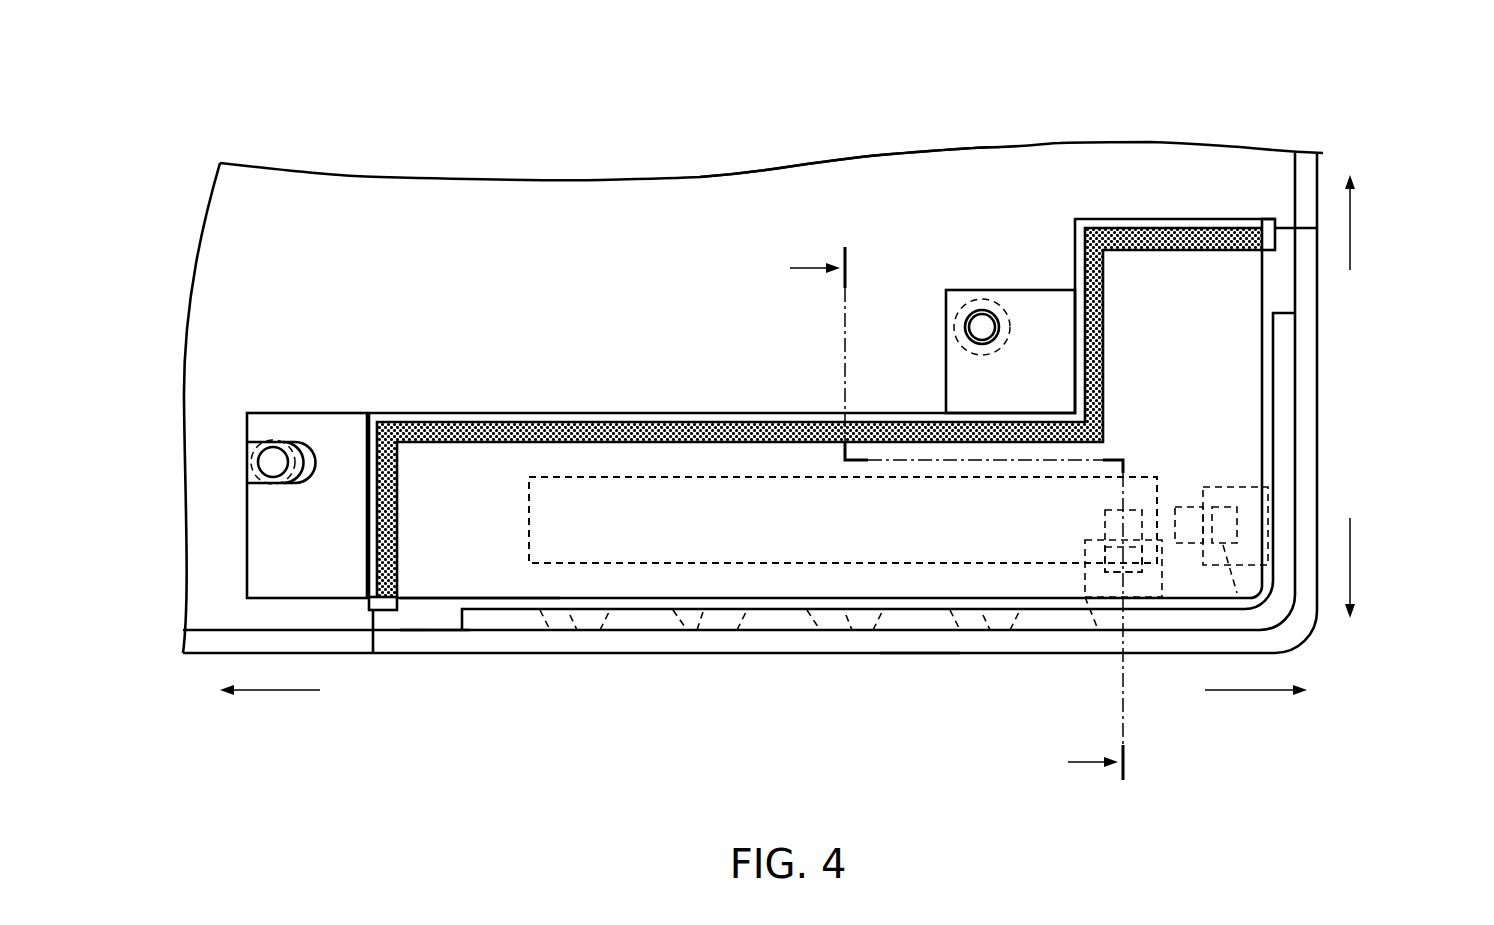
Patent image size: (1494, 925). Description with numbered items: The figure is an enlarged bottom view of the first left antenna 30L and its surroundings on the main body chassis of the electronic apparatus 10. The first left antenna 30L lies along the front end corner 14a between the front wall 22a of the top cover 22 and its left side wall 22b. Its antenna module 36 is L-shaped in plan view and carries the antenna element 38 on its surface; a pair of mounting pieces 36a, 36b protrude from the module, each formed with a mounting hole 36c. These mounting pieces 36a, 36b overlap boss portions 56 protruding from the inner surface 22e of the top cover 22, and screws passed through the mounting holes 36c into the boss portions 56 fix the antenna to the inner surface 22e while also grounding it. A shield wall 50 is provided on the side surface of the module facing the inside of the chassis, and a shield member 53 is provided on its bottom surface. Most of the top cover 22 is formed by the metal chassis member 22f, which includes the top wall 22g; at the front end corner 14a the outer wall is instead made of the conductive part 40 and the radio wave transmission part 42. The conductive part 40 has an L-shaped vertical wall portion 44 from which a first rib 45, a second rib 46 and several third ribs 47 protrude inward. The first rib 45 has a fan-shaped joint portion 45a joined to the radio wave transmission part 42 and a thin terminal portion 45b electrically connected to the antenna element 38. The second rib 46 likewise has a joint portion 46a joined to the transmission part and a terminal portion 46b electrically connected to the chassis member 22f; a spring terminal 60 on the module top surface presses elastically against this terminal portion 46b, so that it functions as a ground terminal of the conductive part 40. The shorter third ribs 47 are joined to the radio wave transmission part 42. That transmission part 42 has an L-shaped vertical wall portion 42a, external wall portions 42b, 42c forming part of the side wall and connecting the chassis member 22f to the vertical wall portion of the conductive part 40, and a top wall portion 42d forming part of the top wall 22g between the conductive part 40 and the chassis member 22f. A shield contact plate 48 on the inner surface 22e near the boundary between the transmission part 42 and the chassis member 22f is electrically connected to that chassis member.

The vehicle door structure 10 is at (786, 418).
The top cover 22 is at (394, 208).
The inner surface 22e is at (535, 210).
The chassis member 22f is at (808, 210).
The top wall 22g is at (903, 120).
The front wall 22a is at (198, 640).
The left side wall 22b is at (1308, 173).
The front end corner 14a is at (1305, 638).
The vertical wall portion 42a is at (780, 620).
The external wall portion 42c is at (1305, 298).
The radio wave transmission part 42 is at (392, 660).
The external wall portion 42b is at (447, 640).
The top wall portion 42d is at (417, 613).
The vertical wall portion 44 is at (912, 643).
The conductive part 40 is at (717, 660).
The antenna module 36 is at (478, 465).
The spring terminal 60 is at (1257, 600).
The shield member 53 is at (600, 430).
The shield wall 50 is at (725, 420).
The shield contact plate 48 is at (385, 612).
The mounting piece 36a is at (323, 425).
The mounting piece 36b is at (1045, 315).
The mounting hole 36c is at (253, 462).
The boss portion 56 is at (250, 465).
The antenna element 38 is at (660, 477).
The third rib 47 is at (968, 556).
The first rib 45 is at (1143, 780).
The joint portion 45a is at (1128, 597).
The terminal portion 45b is at (1160, 597).
The second rib 46 is at (1400, 432).
The joint portion 46a is at (1275, 563).
The terminal portion 46b is at (1240, 485).
The first left antenna 30L is at (492, 585).